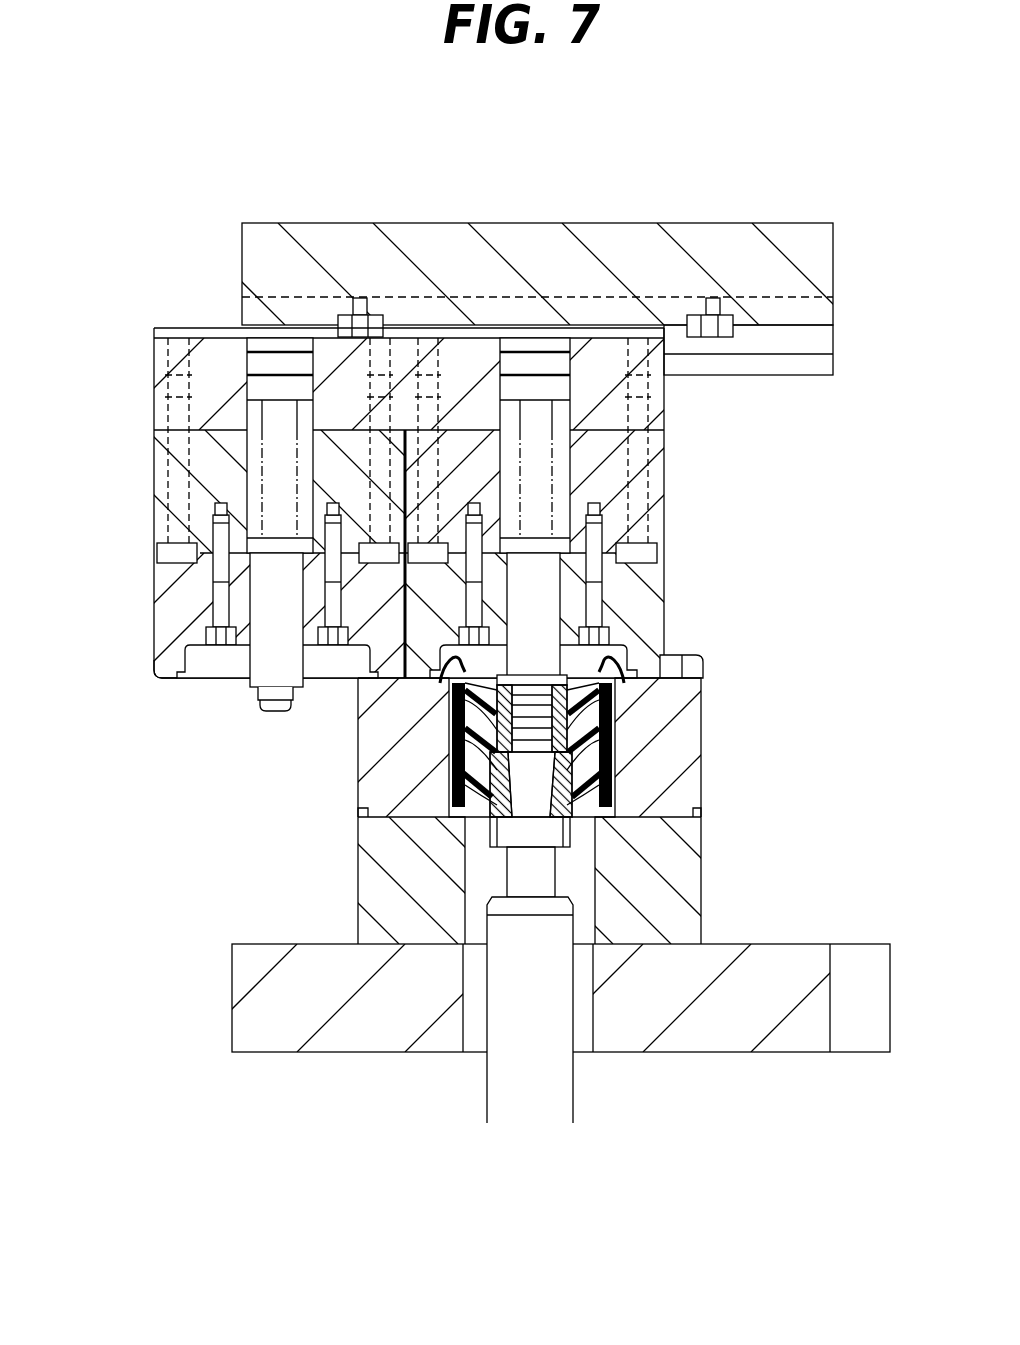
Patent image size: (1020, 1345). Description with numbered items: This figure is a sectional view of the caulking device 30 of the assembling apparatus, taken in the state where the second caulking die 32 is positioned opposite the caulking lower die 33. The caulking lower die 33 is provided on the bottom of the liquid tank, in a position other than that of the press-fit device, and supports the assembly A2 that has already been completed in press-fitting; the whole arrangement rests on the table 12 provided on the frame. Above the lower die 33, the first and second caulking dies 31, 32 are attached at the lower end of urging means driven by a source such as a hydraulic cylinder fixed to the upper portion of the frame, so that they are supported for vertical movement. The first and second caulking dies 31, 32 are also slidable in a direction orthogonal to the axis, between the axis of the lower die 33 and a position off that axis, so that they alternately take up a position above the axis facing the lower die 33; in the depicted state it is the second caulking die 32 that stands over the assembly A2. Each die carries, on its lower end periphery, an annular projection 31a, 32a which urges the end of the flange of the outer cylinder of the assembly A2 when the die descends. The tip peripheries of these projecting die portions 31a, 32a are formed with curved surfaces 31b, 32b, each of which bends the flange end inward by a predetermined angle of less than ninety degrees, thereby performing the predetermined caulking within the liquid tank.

The caulking device 30 is at (186, 246).
The first caulking die 31 is at (170, 628).
The annular projection 31a is at (160, 680).
The curved surface 31b is at (182, 678).
The second caulking die 32 is at (632, 597).
The annular projection 32a is at (638, 660).
The curved surface 32b is at (430, 696).
The caulking lower die 33 is at (675, 750).
The assembly A2 is at (615, 777).
The table 12 is at (731, 1035).